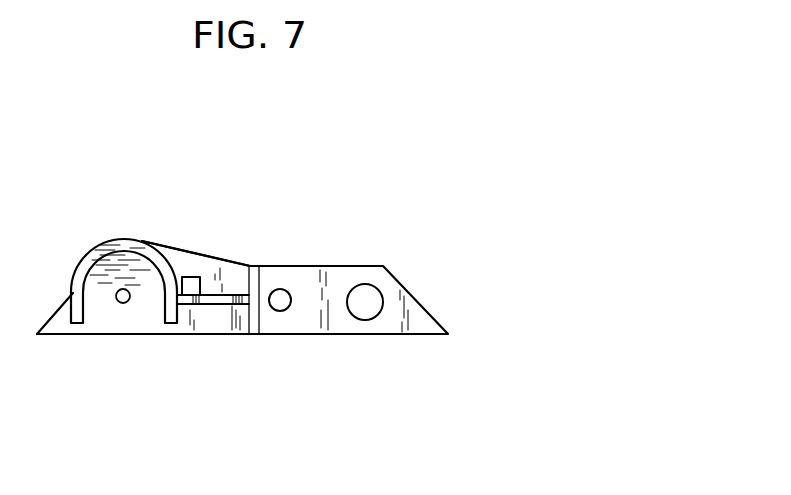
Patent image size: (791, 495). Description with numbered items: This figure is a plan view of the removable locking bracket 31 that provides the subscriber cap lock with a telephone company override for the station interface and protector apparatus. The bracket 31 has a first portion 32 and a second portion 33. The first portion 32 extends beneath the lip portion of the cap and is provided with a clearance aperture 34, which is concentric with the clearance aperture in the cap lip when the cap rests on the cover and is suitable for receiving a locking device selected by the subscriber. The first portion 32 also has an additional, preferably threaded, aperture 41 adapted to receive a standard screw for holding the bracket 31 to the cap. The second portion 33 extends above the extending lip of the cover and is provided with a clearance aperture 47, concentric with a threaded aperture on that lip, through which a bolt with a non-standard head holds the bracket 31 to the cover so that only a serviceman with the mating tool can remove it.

The locking bracket 31 is at (234, 263).
The first portion 32 is at (335, 282).
The second portion 33 is at (155, 320).
The clearance aperture 34 is at (366, 296).
The threaded aperture 41 is at (278, 294).
The clearance aperture 47 is at (118, 303).